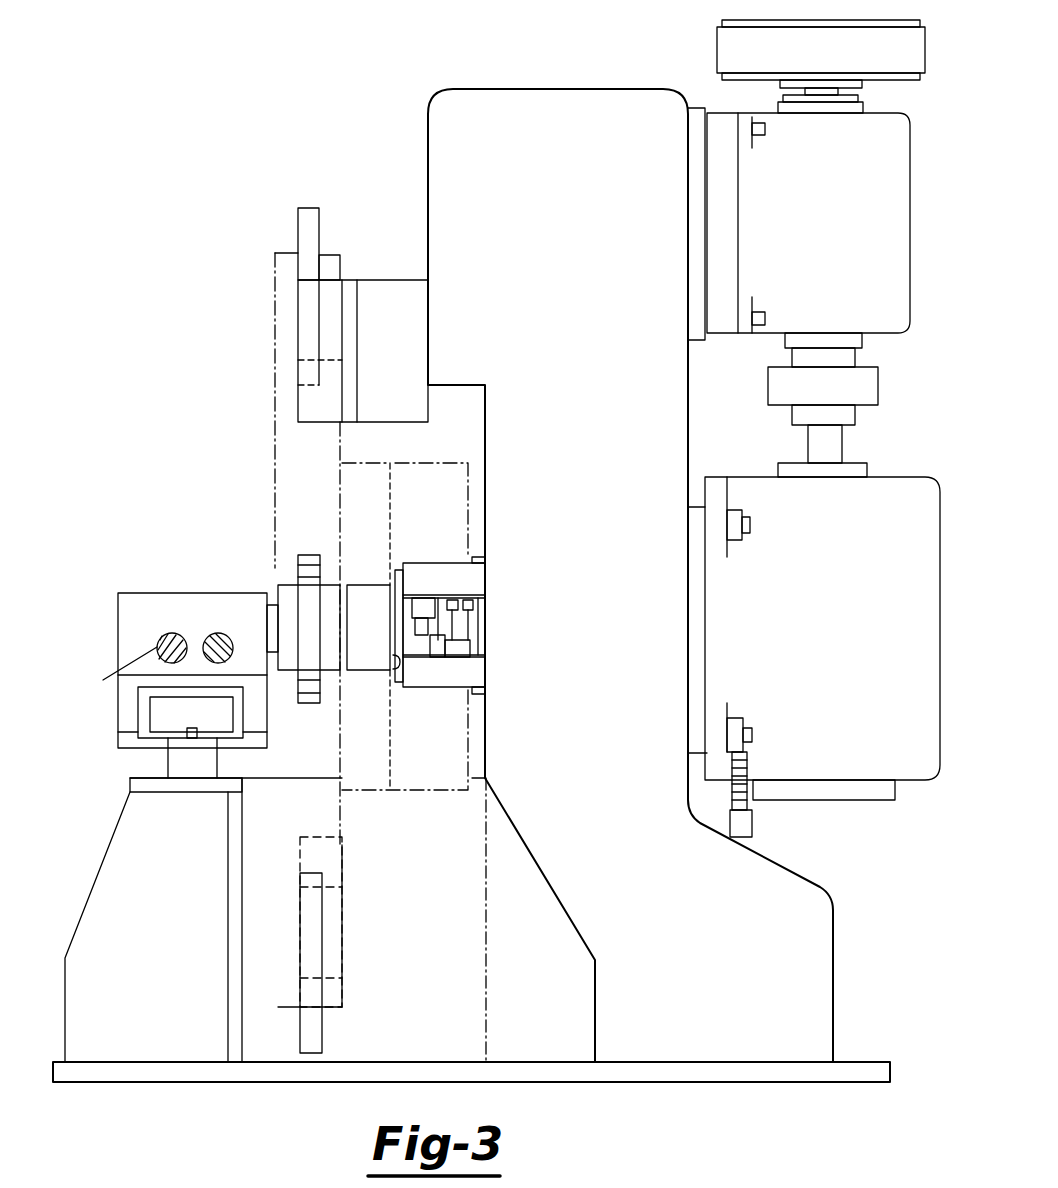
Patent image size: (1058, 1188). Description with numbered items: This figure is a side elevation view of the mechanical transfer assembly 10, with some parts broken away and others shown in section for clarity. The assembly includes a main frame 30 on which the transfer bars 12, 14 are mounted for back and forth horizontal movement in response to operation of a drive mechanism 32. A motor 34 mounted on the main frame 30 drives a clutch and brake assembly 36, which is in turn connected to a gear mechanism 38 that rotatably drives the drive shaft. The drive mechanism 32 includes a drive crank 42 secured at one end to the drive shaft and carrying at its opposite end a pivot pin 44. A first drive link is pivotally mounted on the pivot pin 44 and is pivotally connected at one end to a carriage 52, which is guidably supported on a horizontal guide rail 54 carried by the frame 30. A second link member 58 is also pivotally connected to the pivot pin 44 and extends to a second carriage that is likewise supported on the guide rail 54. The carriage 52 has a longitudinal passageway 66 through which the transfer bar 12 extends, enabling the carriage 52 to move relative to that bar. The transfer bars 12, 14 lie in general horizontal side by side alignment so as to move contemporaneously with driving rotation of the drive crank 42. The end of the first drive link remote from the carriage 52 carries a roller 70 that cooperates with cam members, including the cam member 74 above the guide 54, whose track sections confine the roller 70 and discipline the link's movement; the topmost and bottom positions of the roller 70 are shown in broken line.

The mechanical transfer assembly 10 is at (331, 140).
The transfer bar 12 is at (185, 610).
The transfer bar 14 is at (210, 634).
The main frame 30 is at (588, 52).
The drive mechanism 32 is at (258, 548).
The motor 34 is at (910, 160).
The clutch and brake assembly 36 is at (880, 388).
The gear mechanism 38 is at (940, 735).
The drive crank 42 is at (407, 690).
The pivot pin 44 is at (395, 670).
The carriage 52 is at (118, 612).
The horizontal guide rail 54 is at (168, 720).
The second link member 58 is at (360, 585).
The longitudinal passageway 66 is at (112, 665).
The roller 70 is at (320, 228).
The cam member 74 is at (402, 280).